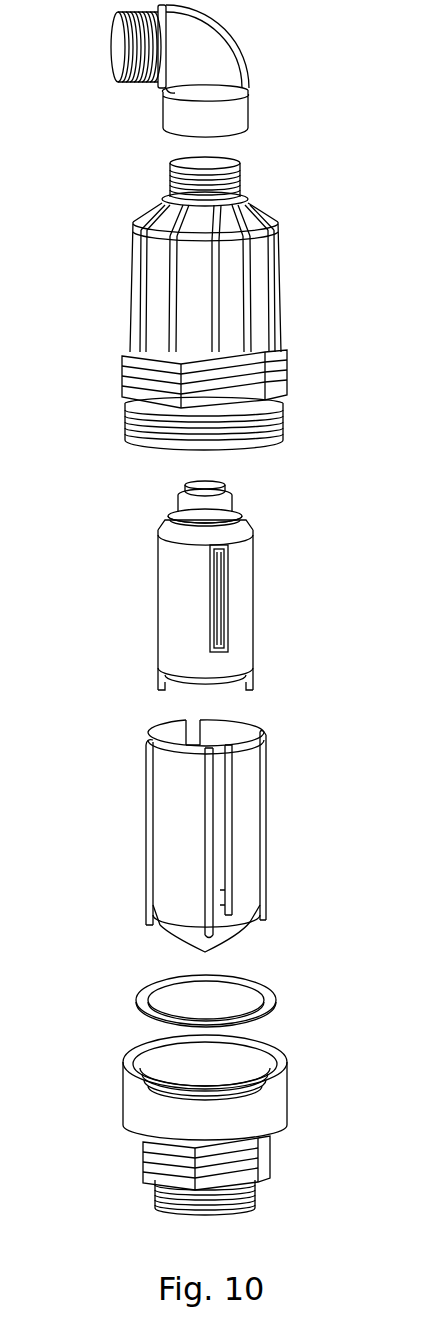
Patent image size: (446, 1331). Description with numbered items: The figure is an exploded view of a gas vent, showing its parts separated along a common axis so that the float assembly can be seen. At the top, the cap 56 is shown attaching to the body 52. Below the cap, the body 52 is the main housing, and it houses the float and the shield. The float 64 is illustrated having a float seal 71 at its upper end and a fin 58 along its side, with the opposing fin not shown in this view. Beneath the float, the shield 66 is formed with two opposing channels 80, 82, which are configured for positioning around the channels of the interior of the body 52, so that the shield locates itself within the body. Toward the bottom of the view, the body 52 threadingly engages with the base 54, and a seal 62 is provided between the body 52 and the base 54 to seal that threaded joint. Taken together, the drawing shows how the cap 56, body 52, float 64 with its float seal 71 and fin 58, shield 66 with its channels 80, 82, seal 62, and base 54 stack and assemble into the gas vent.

The body 52 is at (282, 278).
The base 54 is at (287, 1072).
The cap 56 is at (237, 43).
The fin 58 is at (228, 570).
The seal 62 is at (265, 985).
The float 64 is at (284, 585).
The shield 66 is at (231, 821).
The float seal 71 is at (240, 512).
The channel 80 is at (230, 803).
The channel 82 is at (190, 725).